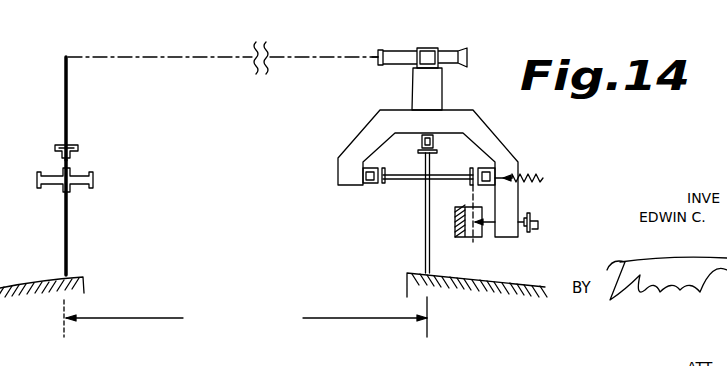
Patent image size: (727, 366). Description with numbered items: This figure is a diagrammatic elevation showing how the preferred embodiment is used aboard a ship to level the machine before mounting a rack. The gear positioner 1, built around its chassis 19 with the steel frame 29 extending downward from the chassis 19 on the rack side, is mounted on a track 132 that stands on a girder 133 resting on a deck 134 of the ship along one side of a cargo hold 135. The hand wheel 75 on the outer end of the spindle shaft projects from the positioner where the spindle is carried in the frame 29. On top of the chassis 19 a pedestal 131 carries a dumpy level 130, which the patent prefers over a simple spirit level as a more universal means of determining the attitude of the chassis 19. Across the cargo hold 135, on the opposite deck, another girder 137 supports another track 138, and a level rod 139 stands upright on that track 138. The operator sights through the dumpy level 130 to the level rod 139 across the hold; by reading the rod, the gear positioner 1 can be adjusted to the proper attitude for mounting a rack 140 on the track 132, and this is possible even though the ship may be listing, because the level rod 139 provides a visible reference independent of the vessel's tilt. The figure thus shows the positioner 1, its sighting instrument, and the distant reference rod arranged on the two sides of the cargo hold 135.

The gear positioner 1 is at (363, 120).
The chassis 19 is at (477, 113).
The steel frame 29 is at (518, 200).
The hand wheel 75 is at (533, 232).
The dumpy level 130 is at (407, 50).
The pedestal 131 is at (442, 93).
The track 132 is at (422, 150).
The girder 133 is at (427, 217).
The deck 134 is at (413, 273).
The cargo hold 135 is at (247, 297).
The girder 137 is at (69, 243).
The track 138 is at (74, 165).
The level rod 139 is at (70, 117).
The rack 140 is at (458, 240).